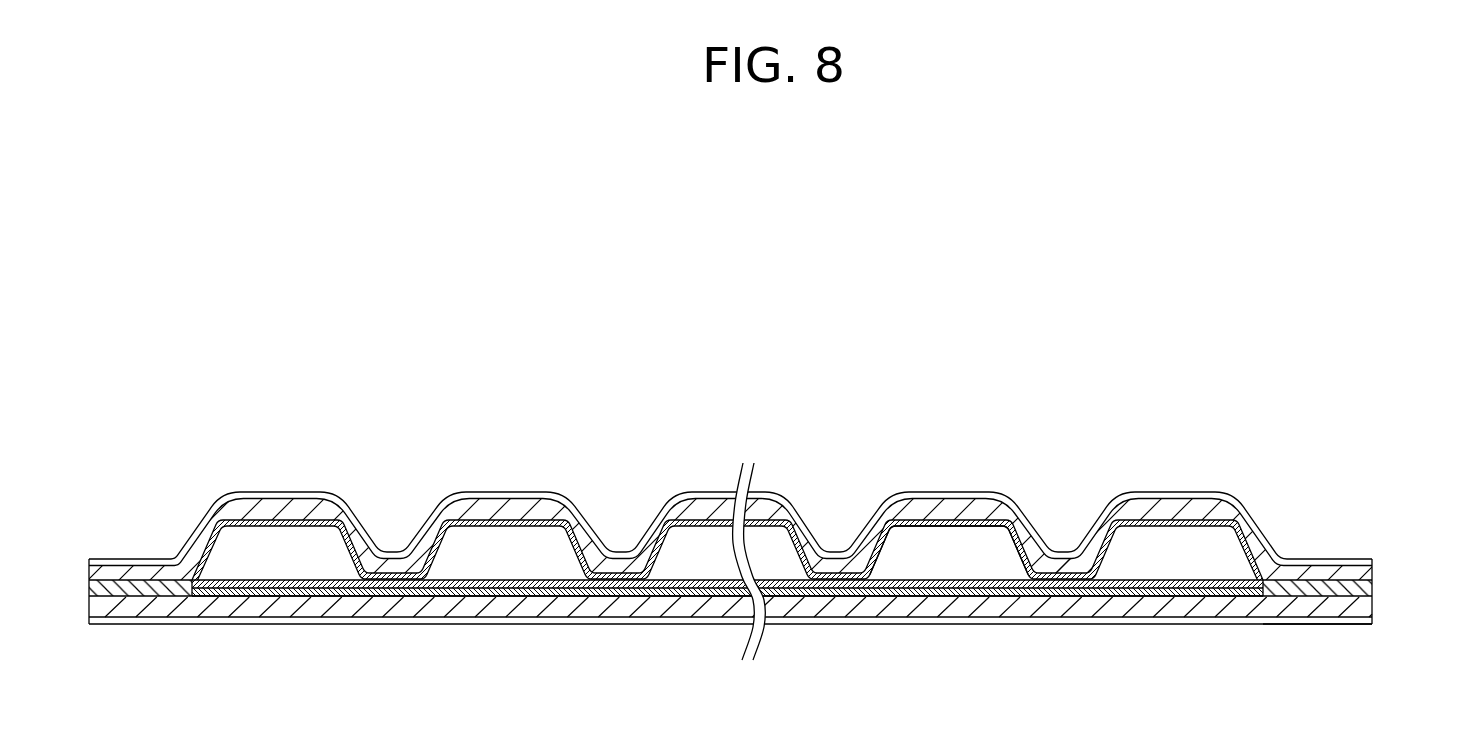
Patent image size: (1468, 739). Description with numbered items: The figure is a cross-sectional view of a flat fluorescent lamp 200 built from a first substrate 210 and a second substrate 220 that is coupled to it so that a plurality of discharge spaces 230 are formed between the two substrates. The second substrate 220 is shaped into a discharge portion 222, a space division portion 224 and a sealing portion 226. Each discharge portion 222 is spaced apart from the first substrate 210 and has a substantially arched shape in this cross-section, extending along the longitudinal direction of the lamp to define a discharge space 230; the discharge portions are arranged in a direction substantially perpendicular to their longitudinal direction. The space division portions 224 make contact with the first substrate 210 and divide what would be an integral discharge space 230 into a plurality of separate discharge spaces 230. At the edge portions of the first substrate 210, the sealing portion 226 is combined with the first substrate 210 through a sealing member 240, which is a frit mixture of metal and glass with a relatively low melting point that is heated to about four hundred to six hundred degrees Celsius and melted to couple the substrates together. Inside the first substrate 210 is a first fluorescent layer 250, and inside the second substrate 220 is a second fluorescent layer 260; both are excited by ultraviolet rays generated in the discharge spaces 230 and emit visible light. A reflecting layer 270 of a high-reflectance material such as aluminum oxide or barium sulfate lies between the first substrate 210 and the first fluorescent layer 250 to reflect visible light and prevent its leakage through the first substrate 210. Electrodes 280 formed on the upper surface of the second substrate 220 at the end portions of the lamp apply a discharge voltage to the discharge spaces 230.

The flat fluorescent lamp 200 is at (768, 360).
The first substrate 210 is at (1368, 609).
The second substrate 220 is at (766, 513).
The discharge portion 222 is at (1138, 510).
The space division portion 224 is at (1060, 563).
The sealing portion 226 is at (1318, 605).
The discharge space 230 is at (946, 551).
The sealing member 240 is at (1320, 624).
The first fluorescent layer 250 is at (903, 590).
The second fluorescent layer 260 is at (987, 520).
The reflecting layer 270 is at (970, 590).
The electrode 280 is at (1370, 563).